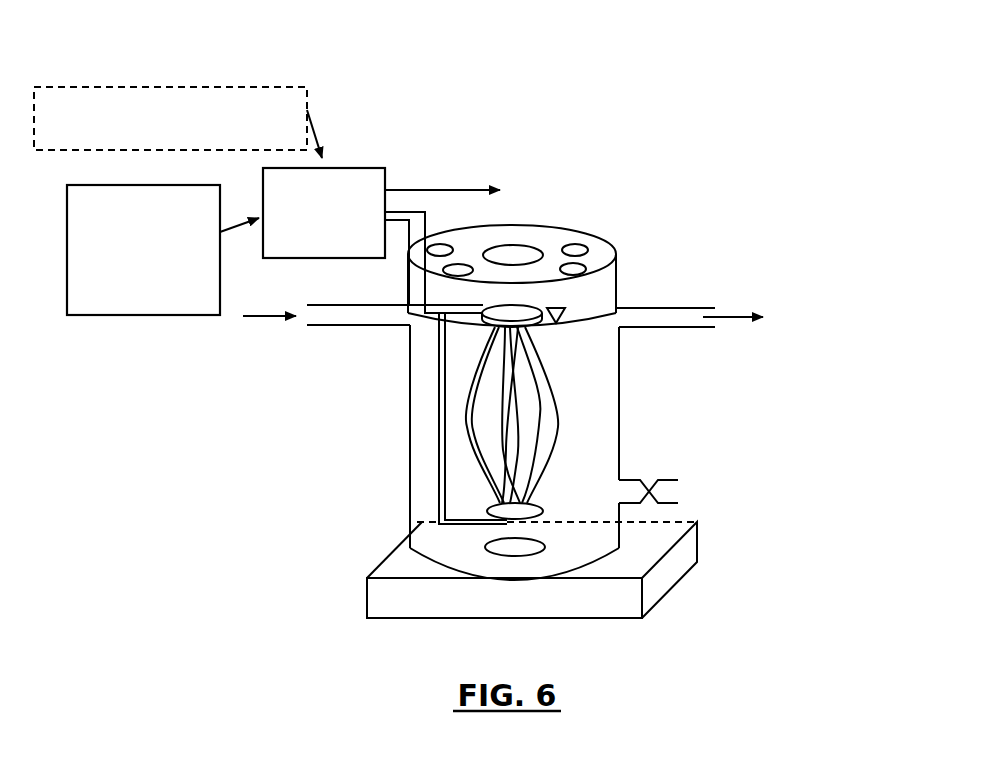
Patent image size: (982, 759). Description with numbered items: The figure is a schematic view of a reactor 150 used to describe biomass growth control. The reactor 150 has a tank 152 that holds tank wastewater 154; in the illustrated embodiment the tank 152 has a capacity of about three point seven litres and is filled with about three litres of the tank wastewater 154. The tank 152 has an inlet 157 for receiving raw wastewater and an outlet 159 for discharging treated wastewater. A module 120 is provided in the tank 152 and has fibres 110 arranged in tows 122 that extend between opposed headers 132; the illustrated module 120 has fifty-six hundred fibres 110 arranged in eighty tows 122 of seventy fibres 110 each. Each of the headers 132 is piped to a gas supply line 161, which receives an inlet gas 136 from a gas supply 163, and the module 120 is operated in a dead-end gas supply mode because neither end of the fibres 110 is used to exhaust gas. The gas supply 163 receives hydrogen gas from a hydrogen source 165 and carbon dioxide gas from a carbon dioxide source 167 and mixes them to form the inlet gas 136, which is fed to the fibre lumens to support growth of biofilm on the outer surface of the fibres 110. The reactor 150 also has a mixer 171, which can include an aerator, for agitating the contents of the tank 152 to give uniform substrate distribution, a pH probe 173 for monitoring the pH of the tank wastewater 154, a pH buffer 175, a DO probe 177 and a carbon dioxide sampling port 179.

The fibres 110 is at (560, 416).
The module 120 is at (548, 479).
The tows 122 is at (628, 415).
The headers 132 is at (486, 322).
The inlet gas 136 is at (381, 200).
The reactor 150 is at (757, 168).
The tank 152 is at (410, 442).
The tank wastewater 154 is at (606, 371).
The inlet 157 is at (333, 318).
The outlet 159 is at (697, 318).
The gas supply line 161 is at (414, 215).
The gas supply 163 is at (355, 168).
The hydrogen source 165 is at (212, 87).
The carbon dioxide source 167 is at (120, 317).
The mixer 171 is at (590, 603).
The pH probe 173 is at (447, 268).
The pH buffer 175 is at (613, 245).
The DO probe 177 is at (438, 250).
The carbon dioxide sampling port 179 is at (641, 480).